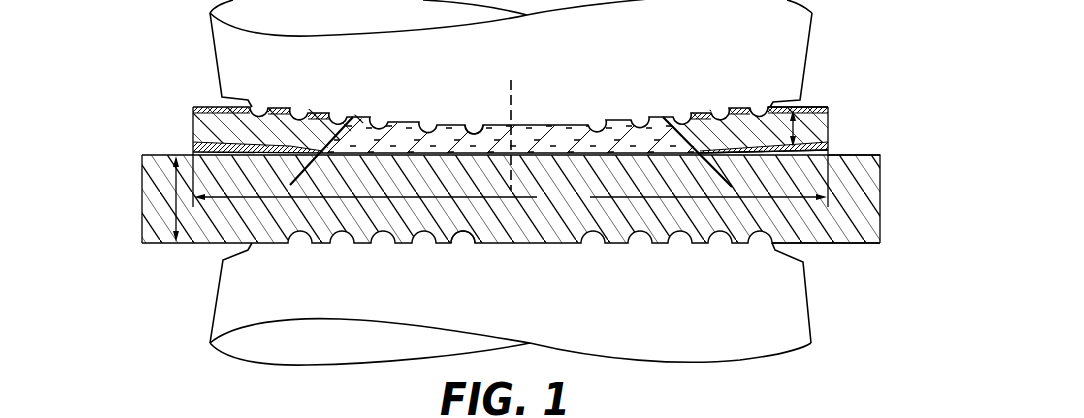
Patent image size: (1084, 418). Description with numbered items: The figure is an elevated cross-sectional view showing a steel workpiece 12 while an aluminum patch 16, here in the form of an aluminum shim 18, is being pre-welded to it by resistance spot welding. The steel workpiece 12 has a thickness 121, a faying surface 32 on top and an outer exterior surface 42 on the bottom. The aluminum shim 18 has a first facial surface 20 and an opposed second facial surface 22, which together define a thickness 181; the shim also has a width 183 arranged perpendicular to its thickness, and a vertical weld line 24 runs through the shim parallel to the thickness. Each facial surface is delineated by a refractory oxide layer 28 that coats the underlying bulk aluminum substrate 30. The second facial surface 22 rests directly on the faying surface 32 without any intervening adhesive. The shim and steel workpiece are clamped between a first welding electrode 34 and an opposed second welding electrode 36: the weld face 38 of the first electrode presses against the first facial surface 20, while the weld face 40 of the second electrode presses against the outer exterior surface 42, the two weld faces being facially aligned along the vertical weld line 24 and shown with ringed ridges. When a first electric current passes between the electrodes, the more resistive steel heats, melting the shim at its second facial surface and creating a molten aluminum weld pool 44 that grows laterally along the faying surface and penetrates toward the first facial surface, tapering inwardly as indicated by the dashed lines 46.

The steel workpiece 12 is at (150, 198).
The thickness 121 is at (174, 208).
The aluminum patch 16 is at (164, 120).
The aluminum shim 18 is at (193, 120).
The thickness 181 is at (793, 133).
The width 183 is at (510, 198).
The first facial surface 20 is at (812, 107).
The second facial surface 22 is at (817, 153).
The vertical weld line 24 is at (513, 100).
The refractory oxide layer 28 is at (193, 112).
The bulk aluminum substrate 30 is at (193, 146).
The faying surface 32 is at (873, 155).
The first welding electrode 34 is at (318, 86).
The second welding electrode 36 is at (318, 295).
The weld face 38 is at (460, 128).
The weld face 40 is at (463, 224).
The outer exterior surface 42 is at (853, 243).
The molten aluminum weld pool 44 is at (614, 137).
The dashed lines 46 is at (315, 167).